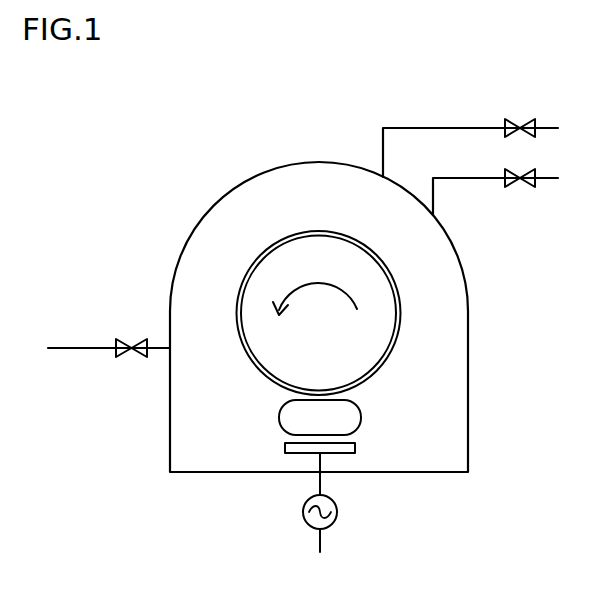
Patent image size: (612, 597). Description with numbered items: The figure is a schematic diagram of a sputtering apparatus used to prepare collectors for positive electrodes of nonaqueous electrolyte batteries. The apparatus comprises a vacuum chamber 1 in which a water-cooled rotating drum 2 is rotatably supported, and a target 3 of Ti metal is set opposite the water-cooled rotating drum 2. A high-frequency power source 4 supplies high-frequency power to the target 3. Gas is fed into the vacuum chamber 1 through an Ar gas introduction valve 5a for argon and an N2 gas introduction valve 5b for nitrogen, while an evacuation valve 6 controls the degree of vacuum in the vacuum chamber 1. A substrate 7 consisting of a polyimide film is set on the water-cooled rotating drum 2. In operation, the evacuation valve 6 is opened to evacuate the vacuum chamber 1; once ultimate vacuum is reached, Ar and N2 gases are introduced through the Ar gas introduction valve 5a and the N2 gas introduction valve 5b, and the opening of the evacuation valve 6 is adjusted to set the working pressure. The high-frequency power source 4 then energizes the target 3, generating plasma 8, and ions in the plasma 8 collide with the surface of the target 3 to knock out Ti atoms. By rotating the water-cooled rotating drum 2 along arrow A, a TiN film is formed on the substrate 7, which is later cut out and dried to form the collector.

The vacuum chamber 1 is at (468, 375).
The water-cooled rotating drum 2 is at (370, 338).
The target 3 is at (355, 452).
The high-frequency power source 4 is at (337, 514).
The Ar gas introduction valve 5a is at (514, 185).
The N2 gas introduction valve 5b is at (525, 122).
The evacuation valve 6 is at (142, 341).
The substrate 7 is at (402, 300).
The plasma 8 is at (284, 436).